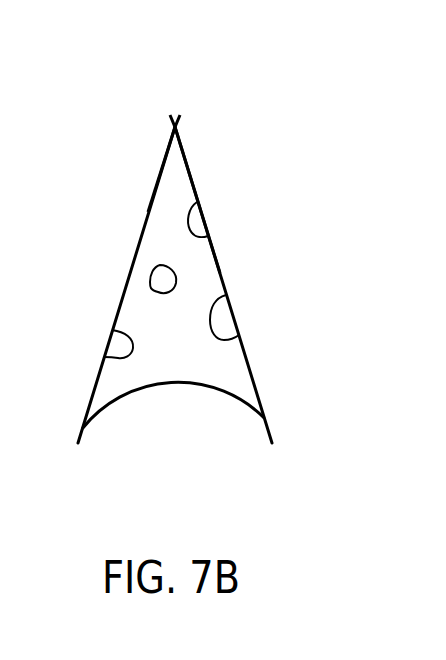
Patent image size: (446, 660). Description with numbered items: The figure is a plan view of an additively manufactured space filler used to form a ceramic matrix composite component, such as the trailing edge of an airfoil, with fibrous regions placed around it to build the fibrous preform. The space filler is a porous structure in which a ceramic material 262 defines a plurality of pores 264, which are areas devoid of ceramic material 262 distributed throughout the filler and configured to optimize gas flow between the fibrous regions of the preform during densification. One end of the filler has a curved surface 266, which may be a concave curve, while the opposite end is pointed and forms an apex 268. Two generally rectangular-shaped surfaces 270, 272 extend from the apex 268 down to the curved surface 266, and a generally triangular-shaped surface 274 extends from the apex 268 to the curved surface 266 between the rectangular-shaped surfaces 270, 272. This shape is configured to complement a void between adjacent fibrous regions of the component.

The ceramic material 262 is at (190, 358).
The pores 264 is at (97, 342).
The curved surface 266 is at (162, 385).
The apex 268 is at (175, 127).
The rectangular-shaped surface 270 is at (220, 273).
The rectangular-shaped surface 272 is at (148, 212).
The triangular-shaped surface 274 is at (212, 367).